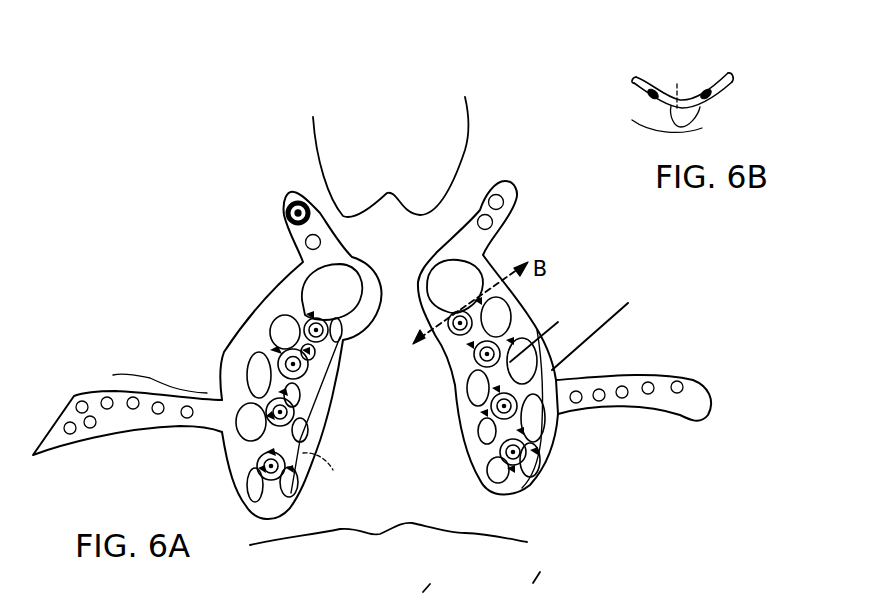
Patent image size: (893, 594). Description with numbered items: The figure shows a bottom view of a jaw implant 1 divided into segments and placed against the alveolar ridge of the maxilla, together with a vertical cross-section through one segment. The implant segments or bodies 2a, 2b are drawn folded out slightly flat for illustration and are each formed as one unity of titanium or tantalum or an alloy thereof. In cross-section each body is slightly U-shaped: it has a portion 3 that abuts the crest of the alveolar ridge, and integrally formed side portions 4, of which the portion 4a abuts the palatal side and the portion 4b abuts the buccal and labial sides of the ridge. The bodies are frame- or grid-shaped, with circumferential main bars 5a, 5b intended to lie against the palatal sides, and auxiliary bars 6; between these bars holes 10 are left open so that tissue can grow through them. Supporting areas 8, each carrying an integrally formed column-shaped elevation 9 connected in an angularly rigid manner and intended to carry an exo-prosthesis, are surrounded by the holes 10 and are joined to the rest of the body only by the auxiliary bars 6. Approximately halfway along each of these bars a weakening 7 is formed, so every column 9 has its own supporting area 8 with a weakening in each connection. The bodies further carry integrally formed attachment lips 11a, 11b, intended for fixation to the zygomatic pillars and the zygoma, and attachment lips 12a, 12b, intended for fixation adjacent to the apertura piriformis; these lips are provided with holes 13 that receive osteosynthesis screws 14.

In FIG. 6A, the jaw implant 1 is at (592, 455).
In FIG. 6A, the implant segment or body 2a is at (570, 378).
In FIG. 6A, the implant segment or body 2b is at (236, 352).
In FIG. 6B, the portion abutting the crest 3 is at (715, 99).
In FIG. 6B, the portion 4 is at (648, 103).
In FIG. 6A, the portion abutting the palatal side 4a is at (464, 414).
In FIG. 6B, the portion abutting the palatal side 4a is at (729, 77).
In FIG. 6A, the portion abutting the buccal and labial sides 4b is at (550, 452).
In FIG. 6B, the portion abutting the buccal and labial sides 4b is at (636, 79).
In FIG. 6A, the main bar or main strip 5a is at (300, 447).
In FIG. 6A, the main bar or main strip 5b is at (258, 308).
In FIG. 6A, the auxiliary bar 6 is at (465, 375).
In FIG. 6A, the weakening 7 is at (291, 493).
In FIG. 6A, the supporting area 8 is at (452, 322).
In FIG. 6B, the supporting area 8 is at (679, 80).
In FIG. 6A, the column-shaped elevation 9 is at (336, 344).
In FIG. 6B, the column-shaped elevation 9 is at (688, 112).
In FIG. 6A, the hole 10 is at (322, 287).
In FIG. 6A, the attachment lip 11a is at (698, 405).
In FIG. 6A, the attachment lip 11b is at (92, 394).
In FIG. 6A, the attachment lip 12a is at (520, 188).
In FIG. 6A, the attachment lip 12b is at (291, 196).
In FIG. 6A, the hole for osteosynthesis screw 13 is at (108, 410).
In FIG. 6A, the osteosynthesis screw 14 is at (310, 262).